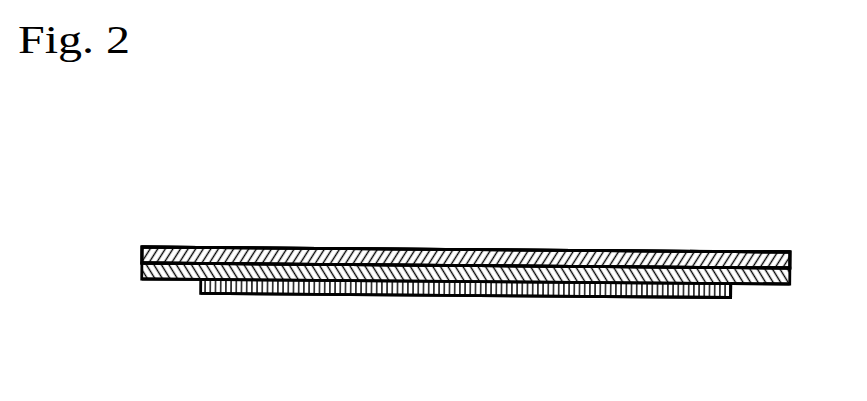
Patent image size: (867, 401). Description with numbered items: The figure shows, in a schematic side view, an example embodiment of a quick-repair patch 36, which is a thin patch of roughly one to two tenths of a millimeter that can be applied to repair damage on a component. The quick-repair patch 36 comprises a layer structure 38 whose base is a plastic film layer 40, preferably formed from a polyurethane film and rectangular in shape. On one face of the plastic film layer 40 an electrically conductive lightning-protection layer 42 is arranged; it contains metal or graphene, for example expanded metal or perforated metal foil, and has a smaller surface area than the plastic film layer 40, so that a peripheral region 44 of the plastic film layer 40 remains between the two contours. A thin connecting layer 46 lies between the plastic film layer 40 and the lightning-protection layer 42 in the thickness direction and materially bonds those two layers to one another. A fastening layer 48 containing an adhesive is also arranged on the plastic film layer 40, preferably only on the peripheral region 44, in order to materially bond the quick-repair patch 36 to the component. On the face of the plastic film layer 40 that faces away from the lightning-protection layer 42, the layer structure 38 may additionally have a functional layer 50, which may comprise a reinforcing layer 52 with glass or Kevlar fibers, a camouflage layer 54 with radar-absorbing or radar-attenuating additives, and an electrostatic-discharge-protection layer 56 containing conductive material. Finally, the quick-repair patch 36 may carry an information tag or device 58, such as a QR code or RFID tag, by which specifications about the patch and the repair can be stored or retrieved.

The quick-repair patch 36 is at (263, 100).
The layer structure 38 is at (450, 196).
The plastic film layer 40 is at (166, 267).
The lightning-protection layer 42 is at (295, 287).
The peripheral region 44 is at (182, 280).
The connecting layer 46 is at (733, 287).
The fastening layer 48 is at (517, 297).
The functional layer 50 is at (631, 250).
The reinforcing layer 52 is at (313, 170).
The camouflage layer 54 is at (466, 213).
The electrostatic-discharge-protection layer 56 is at (466, 213).
The information tag or device 58 is at (741, 232).